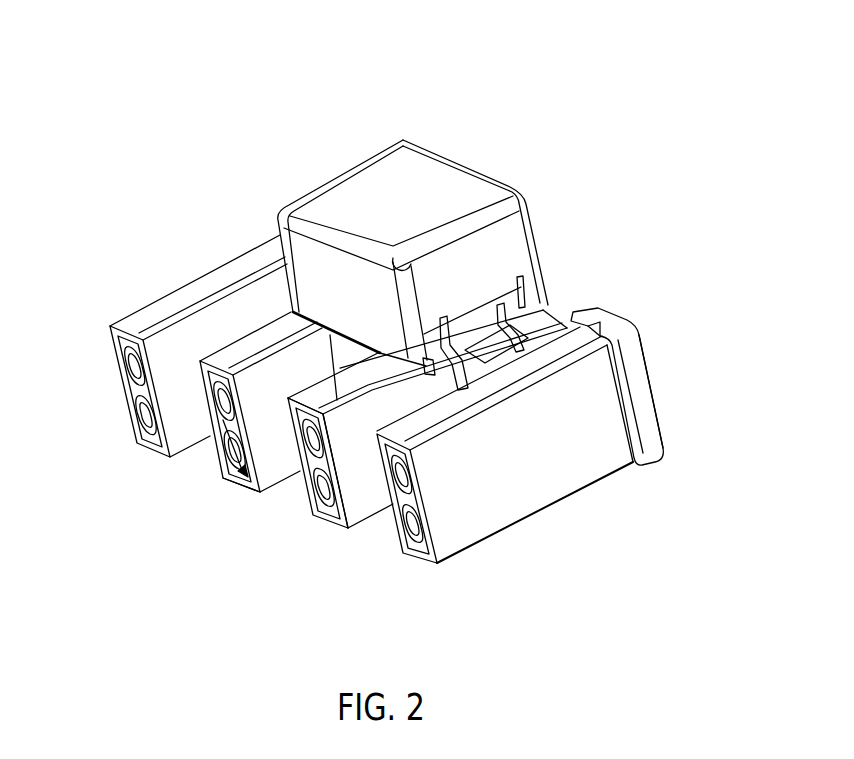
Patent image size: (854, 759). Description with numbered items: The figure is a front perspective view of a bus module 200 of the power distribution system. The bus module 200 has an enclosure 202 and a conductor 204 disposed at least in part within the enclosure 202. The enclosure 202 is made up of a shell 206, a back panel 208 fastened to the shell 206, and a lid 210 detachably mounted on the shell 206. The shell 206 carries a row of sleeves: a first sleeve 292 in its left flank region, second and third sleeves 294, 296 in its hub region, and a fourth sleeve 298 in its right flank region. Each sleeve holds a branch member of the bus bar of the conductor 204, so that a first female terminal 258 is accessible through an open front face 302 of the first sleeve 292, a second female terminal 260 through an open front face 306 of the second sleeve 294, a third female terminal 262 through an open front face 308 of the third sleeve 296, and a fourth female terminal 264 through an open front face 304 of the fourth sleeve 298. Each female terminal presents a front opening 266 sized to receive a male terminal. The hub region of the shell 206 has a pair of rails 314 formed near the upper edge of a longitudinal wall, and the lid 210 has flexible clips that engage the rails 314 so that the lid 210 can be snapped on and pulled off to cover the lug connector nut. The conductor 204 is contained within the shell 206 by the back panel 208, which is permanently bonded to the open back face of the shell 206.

The bus module 200 is at (290, 68).
The lid 210 is at (404, 140).
The enclosure 202 is at (550, 307).
The first sleeve 292 is at (168, 358).
The second sleeve 294 is at (235, 387).
The third sleeve 296 is at (304, 398).
The first female terminal 258 is at (121, 355).
The open front face of the first sleeve 302 is at (152, 450).
The front opening 266 is at (217, 427).
The open front face of the second sleeve 306 is at (238, 483).
The second female terminal 260 is at (258, 495).
The conductor 204 is at (386, 424).
The open front face of the third sleeve 308 is at (343, 523).
The third female terminal 262 is at (315, 442).
The rails 314 is at (343, 418).
The shell 206 is at (561, 448).
The open front face of the fourth sleeve 304 is at (417, 560).
The fourth female terminal 264 is at (408, 478).
The fourth sleeve 298 is at (570, 352).
The back panel 208 is at (663, 453).